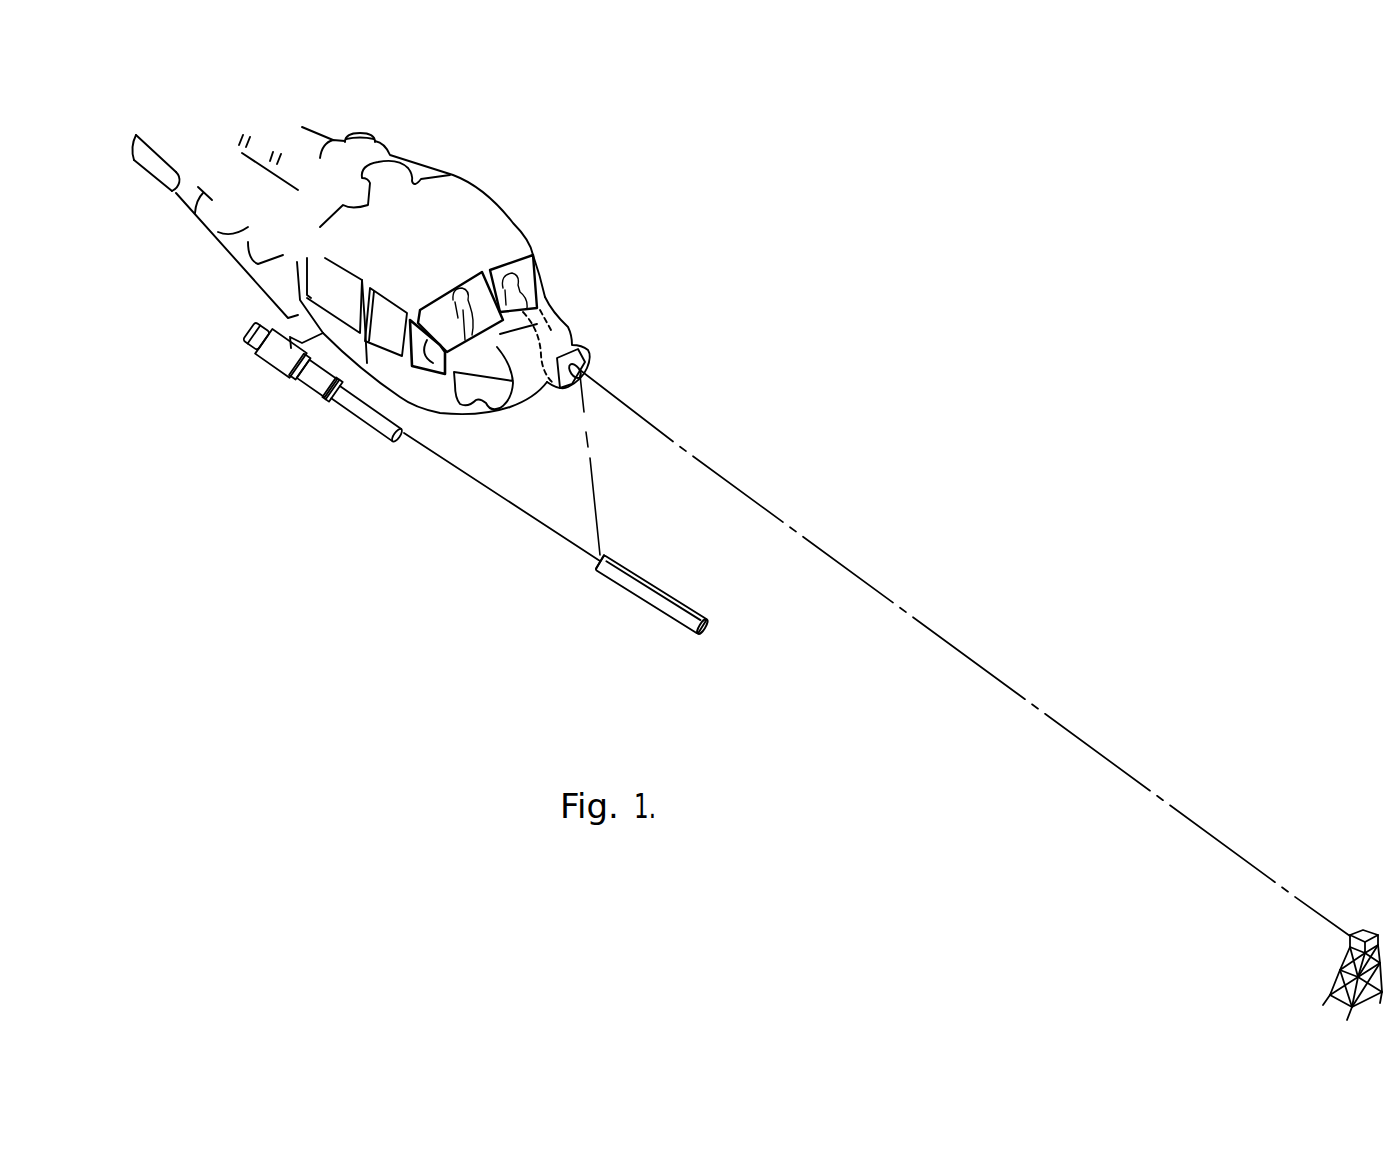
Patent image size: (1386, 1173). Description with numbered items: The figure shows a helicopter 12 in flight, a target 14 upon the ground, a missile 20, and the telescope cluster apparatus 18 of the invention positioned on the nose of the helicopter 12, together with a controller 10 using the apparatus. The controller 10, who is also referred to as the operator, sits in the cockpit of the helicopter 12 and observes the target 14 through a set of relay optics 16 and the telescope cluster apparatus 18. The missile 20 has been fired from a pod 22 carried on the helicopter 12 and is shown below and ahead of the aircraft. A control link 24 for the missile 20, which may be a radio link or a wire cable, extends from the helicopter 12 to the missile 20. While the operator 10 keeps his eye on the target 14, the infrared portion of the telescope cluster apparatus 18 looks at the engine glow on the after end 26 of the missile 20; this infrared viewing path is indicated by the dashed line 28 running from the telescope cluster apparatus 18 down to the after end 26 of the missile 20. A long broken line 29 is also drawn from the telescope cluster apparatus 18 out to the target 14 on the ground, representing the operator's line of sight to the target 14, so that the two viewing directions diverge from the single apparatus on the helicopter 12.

The controller 10 is at (534, 257).
The helicopter 12 is at (387, 288).
The target 14 is at (1366, 928).
The relay optics 16 is at (527, 298).
The telescope cluster apparatus 18 is at (586, 346).
The missile 20 is at (685, 617).
The pod 22 is at (283, 365).
The control link 24 is at (558, 532).
The after end 26 is at (600, 553).
The dashed line 28 is at (596, 497).
The line of sight to target 29 is at (976, 662).